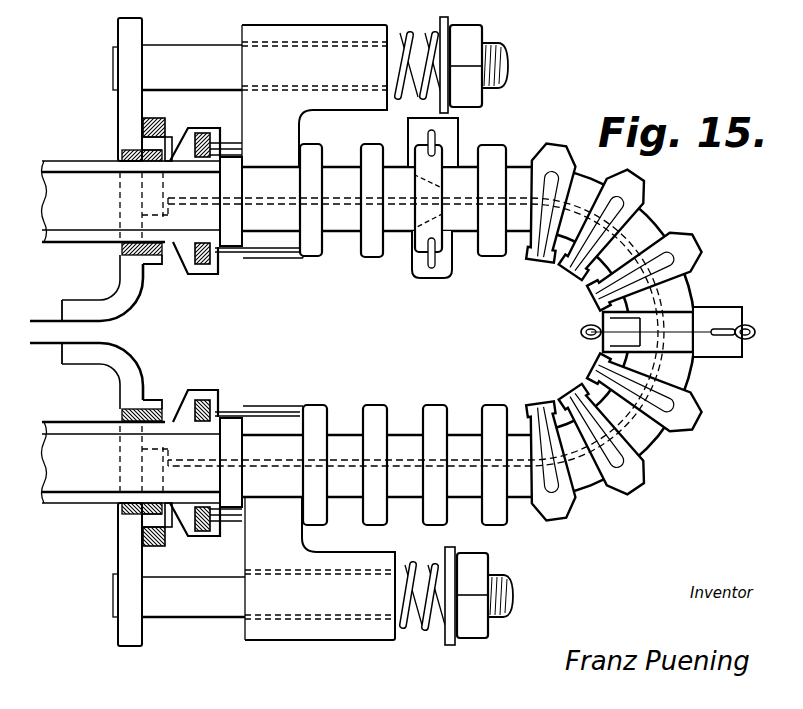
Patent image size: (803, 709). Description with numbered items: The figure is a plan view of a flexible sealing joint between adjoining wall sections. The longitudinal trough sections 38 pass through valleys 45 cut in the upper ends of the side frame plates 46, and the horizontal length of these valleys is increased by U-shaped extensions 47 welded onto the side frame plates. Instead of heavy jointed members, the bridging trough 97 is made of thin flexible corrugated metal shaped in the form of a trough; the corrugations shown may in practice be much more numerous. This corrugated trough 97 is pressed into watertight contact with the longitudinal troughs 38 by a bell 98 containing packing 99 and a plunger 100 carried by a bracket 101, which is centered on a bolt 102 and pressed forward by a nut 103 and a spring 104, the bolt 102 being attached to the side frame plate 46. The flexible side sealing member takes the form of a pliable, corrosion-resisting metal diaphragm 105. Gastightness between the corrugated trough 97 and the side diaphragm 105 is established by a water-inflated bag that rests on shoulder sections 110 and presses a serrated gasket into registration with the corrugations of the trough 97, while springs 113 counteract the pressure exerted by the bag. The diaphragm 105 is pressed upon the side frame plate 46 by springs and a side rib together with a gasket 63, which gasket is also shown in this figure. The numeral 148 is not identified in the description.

The longitudinal trough section 38 is at (78, 159).
The valley 45 is at (125, 246).
The side frame plate 46 is at (120, 26).
The U-shaped extension 47 is at (152, 143).
The gasket 63 is at (140, 122).
The bridging trough 97 is at (656, 211).
The bell 98 is at (210, 275).
The packing 99 is at (210, 130).
The plunger 100 is at (280, 247).
The bracket 101 is at (340, 19).
The bolt 102 is at (205, 34).
The nut 103 is at (470, 40).
The spring 104 is at (413, 35).
The diaphragm 105 is at (460, 453).
The shoulder section 110 is at (463, 172).
The spring 113 is at (433, 256).
The pipe 148 is at (133, 158).